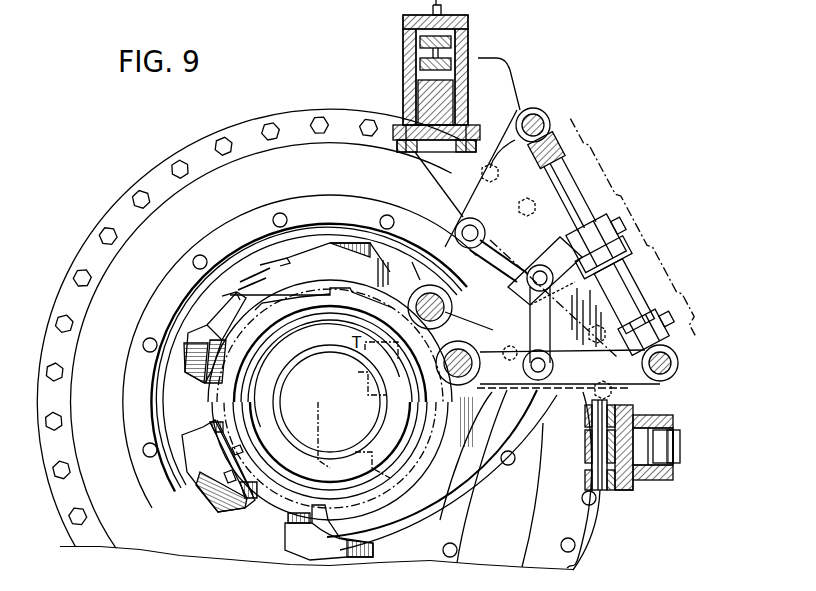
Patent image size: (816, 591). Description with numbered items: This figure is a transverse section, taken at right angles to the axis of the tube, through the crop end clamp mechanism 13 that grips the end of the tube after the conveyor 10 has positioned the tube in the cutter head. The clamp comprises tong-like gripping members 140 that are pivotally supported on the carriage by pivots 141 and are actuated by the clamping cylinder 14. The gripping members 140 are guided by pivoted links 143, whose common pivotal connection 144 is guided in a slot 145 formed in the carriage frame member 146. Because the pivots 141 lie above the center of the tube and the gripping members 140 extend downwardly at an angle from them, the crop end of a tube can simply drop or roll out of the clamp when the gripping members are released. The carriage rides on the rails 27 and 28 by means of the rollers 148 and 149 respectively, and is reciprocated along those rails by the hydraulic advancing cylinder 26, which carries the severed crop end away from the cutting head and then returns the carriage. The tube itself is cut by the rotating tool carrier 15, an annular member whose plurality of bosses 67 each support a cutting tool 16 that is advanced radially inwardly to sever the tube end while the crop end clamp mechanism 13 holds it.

The conveyor 10 is at (330, 14).
The crop end clamp mechanism 13 is at (417, 235).
The clamping cylinder 14 is at (620, 275).
The tool carrier 15 is at (226, 479).
The cutting tool 16 is at (238, 452).
The hydraulic advancing cylinder 26 is at (77, 585).
The rail 27 is at (497, 108).
The rail 28 is at (640, 483).
The boss 67 is at (200, 325).
The gripping member 140 is at (412, 270).
The pivot 141 is at (466, 352).
The pivoted link 143 is at (497, 247).
The common pivotal connection 144 is at (537, 287).
The slot 145 is at (600, 258).
The carriage frame member 146 is at (513, 107).
The roller 148 is at (466, 41).
The roller 149 is at (674, 423).